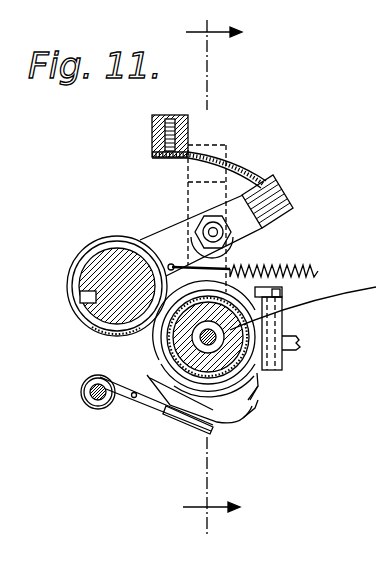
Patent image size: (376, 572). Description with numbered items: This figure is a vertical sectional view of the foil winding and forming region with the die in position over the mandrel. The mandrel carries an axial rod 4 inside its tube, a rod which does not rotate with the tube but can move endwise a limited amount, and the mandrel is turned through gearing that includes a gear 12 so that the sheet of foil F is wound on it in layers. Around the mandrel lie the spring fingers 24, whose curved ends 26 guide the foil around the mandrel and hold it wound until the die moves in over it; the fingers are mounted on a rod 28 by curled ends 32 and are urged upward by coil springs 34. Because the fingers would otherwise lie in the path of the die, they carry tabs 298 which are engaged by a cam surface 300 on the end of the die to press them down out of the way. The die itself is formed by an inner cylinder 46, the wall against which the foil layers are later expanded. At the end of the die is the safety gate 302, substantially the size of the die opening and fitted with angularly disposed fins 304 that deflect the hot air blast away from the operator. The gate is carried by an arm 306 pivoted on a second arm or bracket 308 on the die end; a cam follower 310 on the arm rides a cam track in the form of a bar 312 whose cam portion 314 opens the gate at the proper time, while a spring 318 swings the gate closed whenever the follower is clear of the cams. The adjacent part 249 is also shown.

The gear 12 is at (212, 281).
The bar 312 is at (151, 122).
The cam portion 314 is at (232, 160).
The cam follower 310 is at (284, 196).
The arm 306 is at (250, 238).
The second arm or bracket 308 is at (234, 266).
The spring 318 is at (318, 270).
The gate 302 is at (74, 264).
The fins 304 is at (79, 295).
The bracket 249 is at (288, 322).
The inner cylinder 46 is at (255, 346).
The foil F is at (245, 359).
The axial rod 4 is at (210, 338).
The cam surface 300 is at (250, 400).
The curved ends 26 is at (235, 425).
The tabs 298 is at (186, 421).
The spring fingers 24 is at (148, 422).
The coil springs 34 is at (124, 407).
The rod 28 is at (82, 392).
The curled ends 32 is at (90, 406).